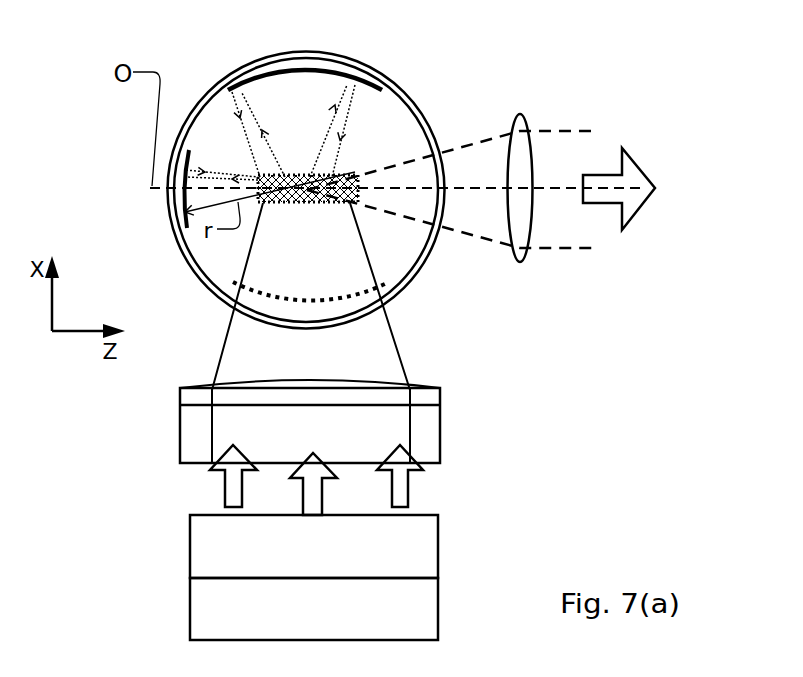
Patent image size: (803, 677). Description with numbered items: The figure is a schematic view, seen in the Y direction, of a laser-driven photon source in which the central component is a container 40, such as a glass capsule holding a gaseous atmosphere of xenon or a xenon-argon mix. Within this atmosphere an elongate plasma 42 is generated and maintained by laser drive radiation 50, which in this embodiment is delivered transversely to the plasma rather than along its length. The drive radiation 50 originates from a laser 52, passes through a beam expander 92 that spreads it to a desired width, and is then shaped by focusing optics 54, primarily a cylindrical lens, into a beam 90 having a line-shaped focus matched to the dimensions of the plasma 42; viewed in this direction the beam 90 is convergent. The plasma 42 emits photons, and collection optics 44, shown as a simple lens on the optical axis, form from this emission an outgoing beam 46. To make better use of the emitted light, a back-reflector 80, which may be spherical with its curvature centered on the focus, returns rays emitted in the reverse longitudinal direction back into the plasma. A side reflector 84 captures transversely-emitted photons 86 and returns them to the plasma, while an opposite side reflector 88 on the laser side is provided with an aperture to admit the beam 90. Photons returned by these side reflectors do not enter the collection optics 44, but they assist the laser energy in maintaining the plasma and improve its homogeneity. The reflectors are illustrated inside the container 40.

The container 40 is at (398, 82).
The plasma 42 is at (320, 205).
The collection optics 44 is at (523, 120).
The beam 46 is at (608, 175).
The drive radiation 50 is at (410, 485).
The laser 52 is at (438, 605).
The focusing optics 54 is at (180, 435).
The back-reflector 80 is at (188, 152).
The side reflector 84 is at (295, 82).
The transversely-emitted photons 86 is at (341, 100).
The opposite side reflector 88 is at (282, 300).
The beam 90 is at (393, 347).
The beam expander 92 is at (438, 547).